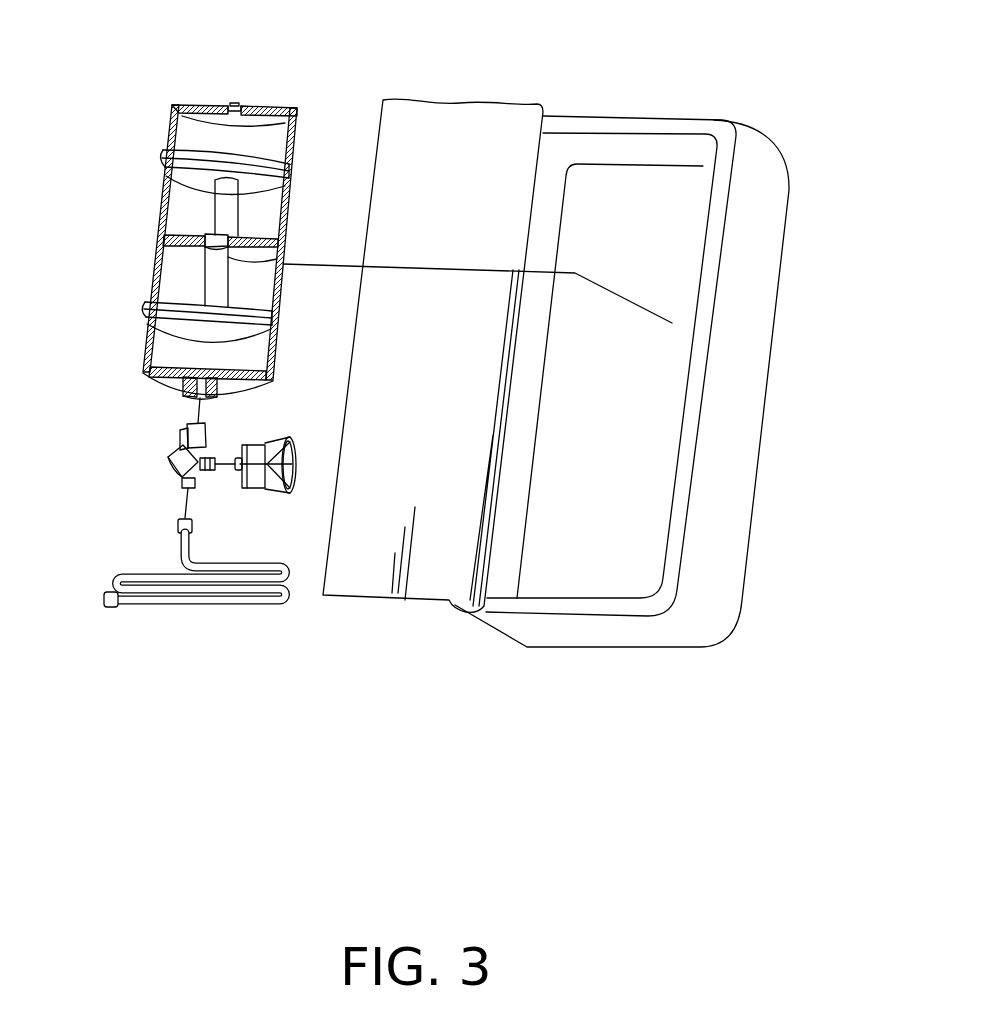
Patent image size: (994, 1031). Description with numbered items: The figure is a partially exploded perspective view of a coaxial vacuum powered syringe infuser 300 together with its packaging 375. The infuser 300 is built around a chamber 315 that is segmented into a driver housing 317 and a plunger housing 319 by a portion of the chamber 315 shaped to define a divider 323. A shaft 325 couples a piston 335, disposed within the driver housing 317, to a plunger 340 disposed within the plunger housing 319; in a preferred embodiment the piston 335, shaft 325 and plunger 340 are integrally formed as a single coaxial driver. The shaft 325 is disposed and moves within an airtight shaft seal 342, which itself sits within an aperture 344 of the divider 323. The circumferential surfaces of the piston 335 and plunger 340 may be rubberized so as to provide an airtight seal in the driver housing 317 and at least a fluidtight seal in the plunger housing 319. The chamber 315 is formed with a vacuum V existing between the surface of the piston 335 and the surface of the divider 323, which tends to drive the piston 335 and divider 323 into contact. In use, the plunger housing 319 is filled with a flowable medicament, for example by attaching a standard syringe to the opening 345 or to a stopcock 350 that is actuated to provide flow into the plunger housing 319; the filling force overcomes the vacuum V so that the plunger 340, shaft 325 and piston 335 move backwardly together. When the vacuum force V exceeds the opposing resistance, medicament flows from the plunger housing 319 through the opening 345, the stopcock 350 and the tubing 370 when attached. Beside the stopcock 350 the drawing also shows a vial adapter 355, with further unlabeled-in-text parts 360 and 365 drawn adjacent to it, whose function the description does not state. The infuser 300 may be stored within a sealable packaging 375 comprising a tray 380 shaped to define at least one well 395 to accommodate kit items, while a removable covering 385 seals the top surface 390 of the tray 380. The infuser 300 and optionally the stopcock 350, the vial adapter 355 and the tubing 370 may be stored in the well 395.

The coaxial vacuum powered syringe infuser 300 is at (152, 161).
The vacuum V is at (183, 197).
The driver housing 317 is at (278, 140).
The piston 335 is at (255, 183).
The shaft 325 is at (227, 198).
The divider 323 is at (155, 237).
The shaft seal 342 is at (205, 243).
The aperture 344 is at (207, 243).
The plunger 340 is at (173, 327).
The plunger housing 319 is at (165, 356).
The chamber 315 is at (173, 383).
The opening 345 is at (193, 400).
The stopcock 350 is at (181, 457).
The nozzle 360 is at (254, 447).
The vial adapter 355 is at (253, 482).
The nozzle bell 365 is at (262, 483).
The tubing 370 is at (160, 572).
The removable covering 385 is at (445, 119).
The sealable packaging 375 is at (630, 106).
The top surface 390 is at (692, 123).
The well 395 is at (687, 202).
The tray 380 is at (755, 260).